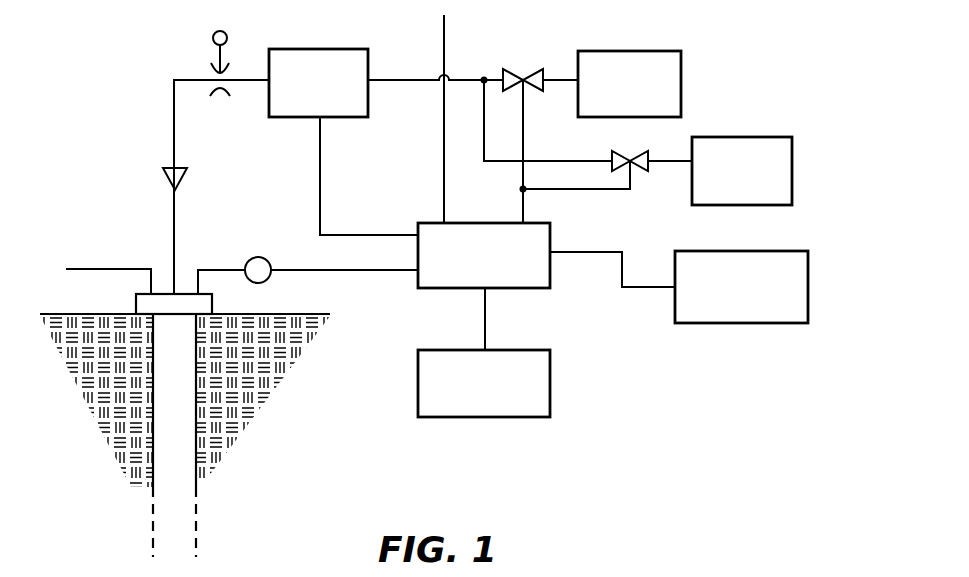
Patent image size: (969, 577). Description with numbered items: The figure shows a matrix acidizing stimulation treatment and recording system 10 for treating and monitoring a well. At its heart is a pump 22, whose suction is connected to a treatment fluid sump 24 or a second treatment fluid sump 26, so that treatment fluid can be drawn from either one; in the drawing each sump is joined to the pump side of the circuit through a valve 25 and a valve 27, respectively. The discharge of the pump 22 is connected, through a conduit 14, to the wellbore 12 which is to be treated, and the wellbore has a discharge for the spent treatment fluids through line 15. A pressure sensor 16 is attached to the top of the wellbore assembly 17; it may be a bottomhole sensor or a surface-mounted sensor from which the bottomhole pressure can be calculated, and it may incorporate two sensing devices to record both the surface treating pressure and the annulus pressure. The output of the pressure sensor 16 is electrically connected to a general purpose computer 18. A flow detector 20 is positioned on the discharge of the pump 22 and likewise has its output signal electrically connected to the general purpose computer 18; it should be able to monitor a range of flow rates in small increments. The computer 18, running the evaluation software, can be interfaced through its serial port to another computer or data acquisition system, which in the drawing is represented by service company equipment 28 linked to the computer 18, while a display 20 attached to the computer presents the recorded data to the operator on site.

The matrix acidizing stimulation treatment and recording system 10 is at (680, 449).
The wellbore 12 is at (197, 476).
The pump discharge conduit 14 is at (174, 133).
The line 15 is at (92, 269).
The pressure sensor 16 is at (263, 258).
The wellbore assembly 17 is at (213, 297).
The general purpose computer 18 is at (551, 278).
The flow detector 20 is at (551, 380).
The pump 22 is at (358, 118).
The treatment fluid sump 24 is at (681, 73).
The first valve 25 is at (524, 68).
The treatment fluid sump 26 is at (792, 160).
The second valve 27 is at (622, 153).
The service company equipment 28 is at (777, 323).